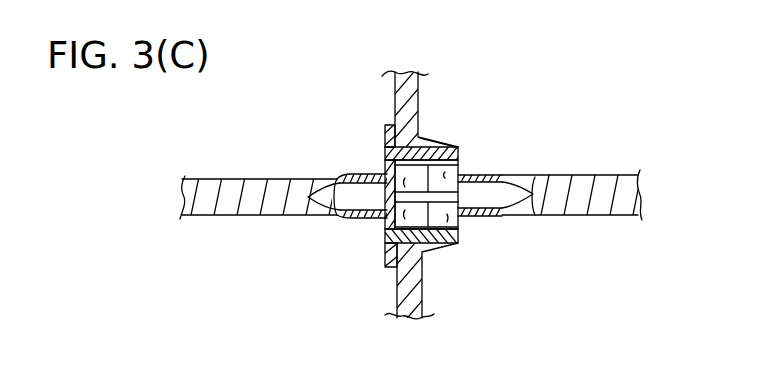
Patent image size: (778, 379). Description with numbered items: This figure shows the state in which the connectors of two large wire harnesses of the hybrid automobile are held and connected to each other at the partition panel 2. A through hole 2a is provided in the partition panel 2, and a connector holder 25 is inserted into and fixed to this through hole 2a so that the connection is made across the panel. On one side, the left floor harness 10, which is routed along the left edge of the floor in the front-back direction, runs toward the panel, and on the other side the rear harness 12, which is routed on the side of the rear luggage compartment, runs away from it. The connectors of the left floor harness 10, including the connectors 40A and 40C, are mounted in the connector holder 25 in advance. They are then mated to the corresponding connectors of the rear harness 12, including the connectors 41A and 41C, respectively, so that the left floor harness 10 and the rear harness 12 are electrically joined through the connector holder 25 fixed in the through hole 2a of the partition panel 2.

The partition panel 2 is at (414, 94).
The through hole 2a is at (415, 132).
The left floor harness 10 is at (248, 190).
The rear harness 12 is at (597, 190).
The connector holder 25 is at (385, 237).
The connector 40A is at (390, 228).
The connector 40C is at (355, 182).
The connector 41A is at (447, 217).
The connector 41C is at (443, 170).